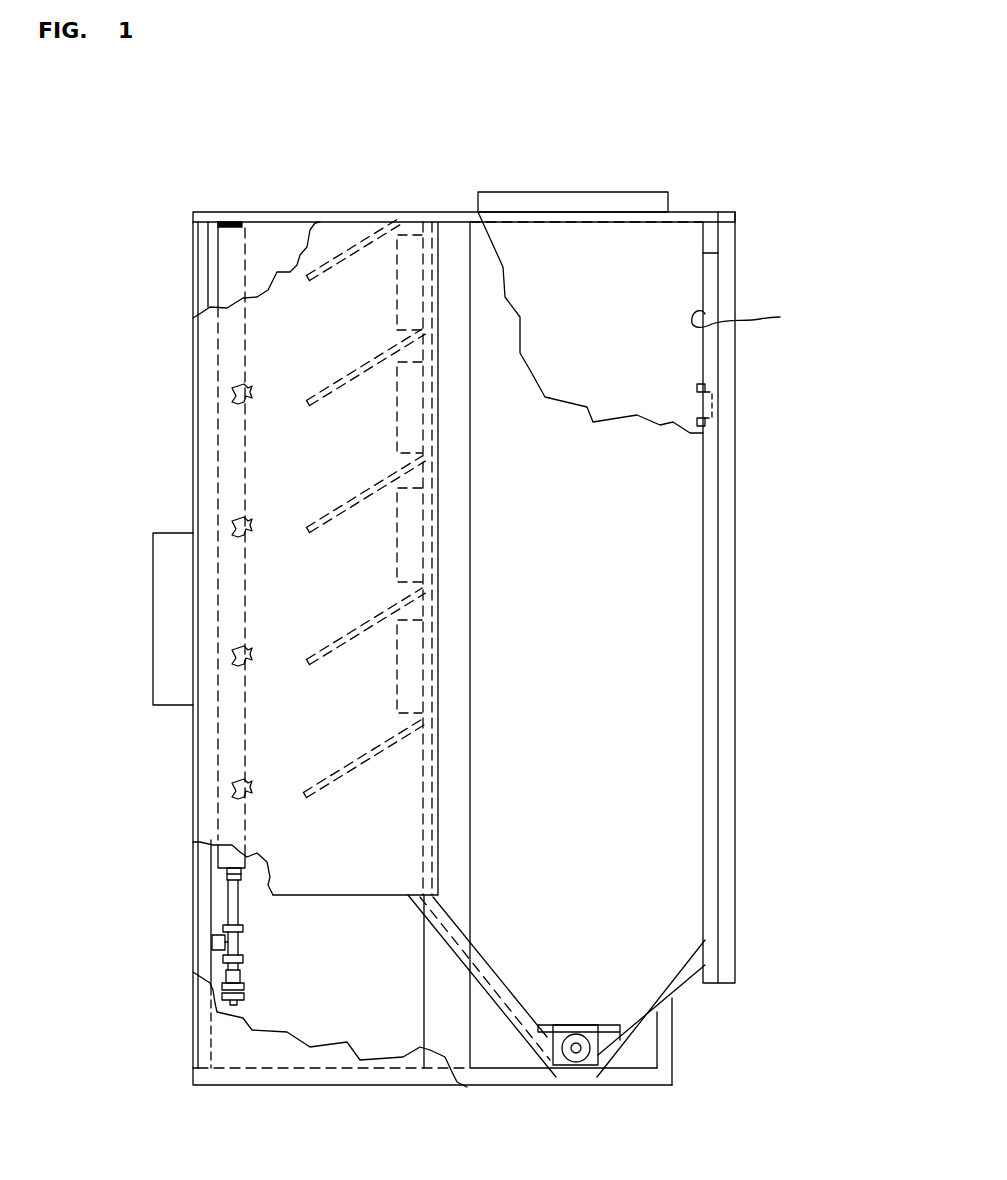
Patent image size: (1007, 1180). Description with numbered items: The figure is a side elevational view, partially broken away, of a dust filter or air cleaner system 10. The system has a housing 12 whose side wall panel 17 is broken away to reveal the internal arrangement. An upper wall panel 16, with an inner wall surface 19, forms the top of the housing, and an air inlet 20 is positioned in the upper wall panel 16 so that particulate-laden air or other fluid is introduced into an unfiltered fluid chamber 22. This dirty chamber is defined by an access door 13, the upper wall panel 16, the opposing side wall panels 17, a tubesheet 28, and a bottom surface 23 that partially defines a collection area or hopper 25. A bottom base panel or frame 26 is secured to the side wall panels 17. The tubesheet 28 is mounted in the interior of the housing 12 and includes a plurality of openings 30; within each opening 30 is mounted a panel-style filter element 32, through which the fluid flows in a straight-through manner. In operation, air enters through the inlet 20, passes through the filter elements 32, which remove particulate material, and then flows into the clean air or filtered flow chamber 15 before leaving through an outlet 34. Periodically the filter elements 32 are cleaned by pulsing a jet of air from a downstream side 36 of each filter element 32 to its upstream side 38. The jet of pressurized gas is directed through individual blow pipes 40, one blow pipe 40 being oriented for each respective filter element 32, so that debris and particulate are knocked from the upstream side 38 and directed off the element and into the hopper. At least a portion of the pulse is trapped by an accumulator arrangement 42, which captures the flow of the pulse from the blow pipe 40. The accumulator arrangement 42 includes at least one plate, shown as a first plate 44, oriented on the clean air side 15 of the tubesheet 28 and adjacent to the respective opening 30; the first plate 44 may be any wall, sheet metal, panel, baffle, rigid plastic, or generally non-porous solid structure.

The air cleaner system 10 is at (733, 98).
The housing 12 is at (192, 918).
The access door 13 is at (740, 812).
The filtered flow chamber 15 is at (268, 470).
The upper wall panel 16 is at (690, 212).
The side wall panel 17 is at (225, 1040).
The inner wall surface 19 is at (343, 222).
The air inlet 20 is at (641, 192).
The unfiltered fluid chamber 22 is at (752, 365).
The bottom surface 23 is at (487, 960).
The hopper 25 is at (673, 1002).
The bottom base panel 26 is at (467, 1087).
The tubesheet 28 is at (427, 590).
The opening 30 is at (430, 316).
The panel-style filter element 32 is at (397, 298).
The outlet 34 is at (168, 637).
The downstream side 36 is at (397, 510).
The upstream side 38 is at (433, 500).
The blow pipe 40 is at (235, 395).
The accumulator arrangement 42 is at (278, 802).
The first plate 44 is at (330, 264).